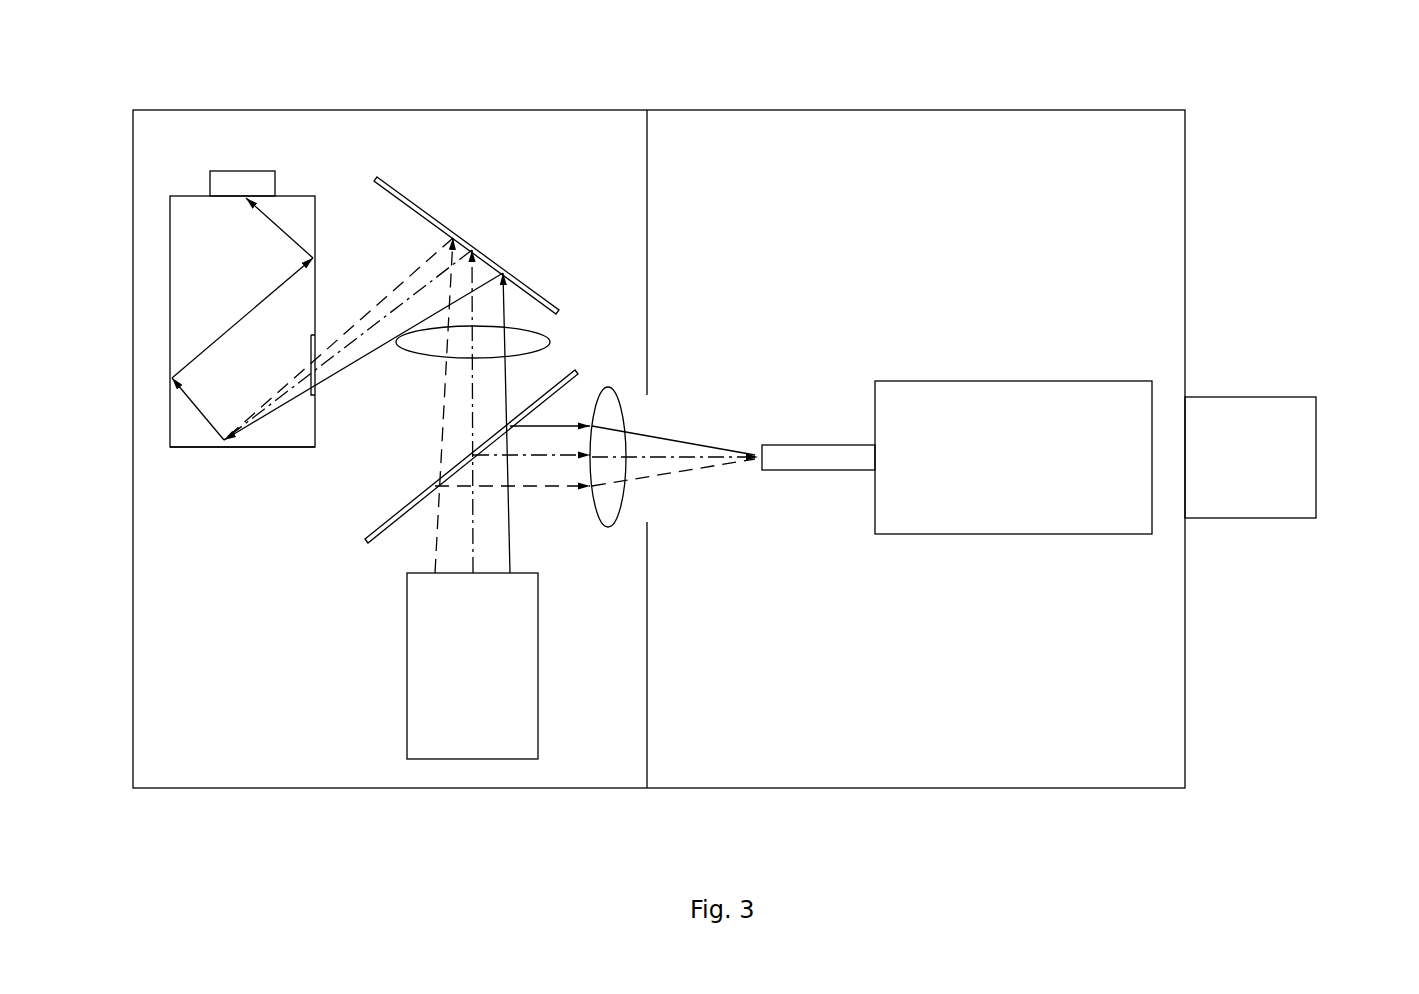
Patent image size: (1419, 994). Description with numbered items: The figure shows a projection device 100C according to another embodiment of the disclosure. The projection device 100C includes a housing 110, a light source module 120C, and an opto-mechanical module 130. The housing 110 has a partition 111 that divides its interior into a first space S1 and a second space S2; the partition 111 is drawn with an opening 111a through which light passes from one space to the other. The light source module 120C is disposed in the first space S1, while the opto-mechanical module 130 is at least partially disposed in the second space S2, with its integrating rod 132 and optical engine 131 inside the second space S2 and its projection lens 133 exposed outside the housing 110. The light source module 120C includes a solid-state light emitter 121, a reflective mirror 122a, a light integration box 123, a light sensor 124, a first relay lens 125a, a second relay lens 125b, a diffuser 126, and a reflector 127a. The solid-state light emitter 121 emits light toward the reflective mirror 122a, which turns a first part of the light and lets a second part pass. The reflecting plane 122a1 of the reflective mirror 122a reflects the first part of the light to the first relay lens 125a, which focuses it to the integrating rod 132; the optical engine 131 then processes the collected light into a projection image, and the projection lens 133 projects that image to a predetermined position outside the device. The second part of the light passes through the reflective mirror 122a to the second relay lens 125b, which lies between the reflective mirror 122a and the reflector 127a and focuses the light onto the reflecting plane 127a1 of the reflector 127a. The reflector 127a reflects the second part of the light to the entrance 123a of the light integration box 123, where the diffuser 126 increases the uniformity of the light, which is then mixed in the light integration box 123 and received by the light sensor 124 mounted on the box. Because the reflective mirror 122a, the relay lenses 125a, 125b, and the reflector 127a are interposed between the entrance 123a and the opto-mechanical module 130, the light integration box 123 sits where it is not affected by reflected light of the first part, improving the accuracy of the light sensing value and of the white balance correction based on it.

The projection device 100C is at (112, 55).
The housing 110 is at (1057, 110).
The partition 111 is at (647, 148).
The opening of partition 111a is at (650, 412).
The light source module 120C is at (190, 136).
The solid-state light emitter 121 is at (474, 760).
The reflective mirror 122a is at (385, 528).
The reflecting plane 122a1 is at (375, 545).
The light integration box 123 is at (289, 196).
The entrance 123a is at (322, 337).
The light sensor 124 is at (233, 171).
The first relay lens 125a is at (606, 527).
The second relay lens 125b is at (550, 342).
The diffuser 126 is at (313, 397).
The reflector 127a is at (420, 203).
The reflecting plane 127a1 is at (386, 191).
The opto-mechanical module 130 is at (1090, 525).
The optical engine 131 is at (1015, 515).
The integrating rod 132 is at (810, 458).
The projection lens 133 is at (1223, 505).
The first space S1 is at (210, 750).
The second space S2 is at (1137, 750).